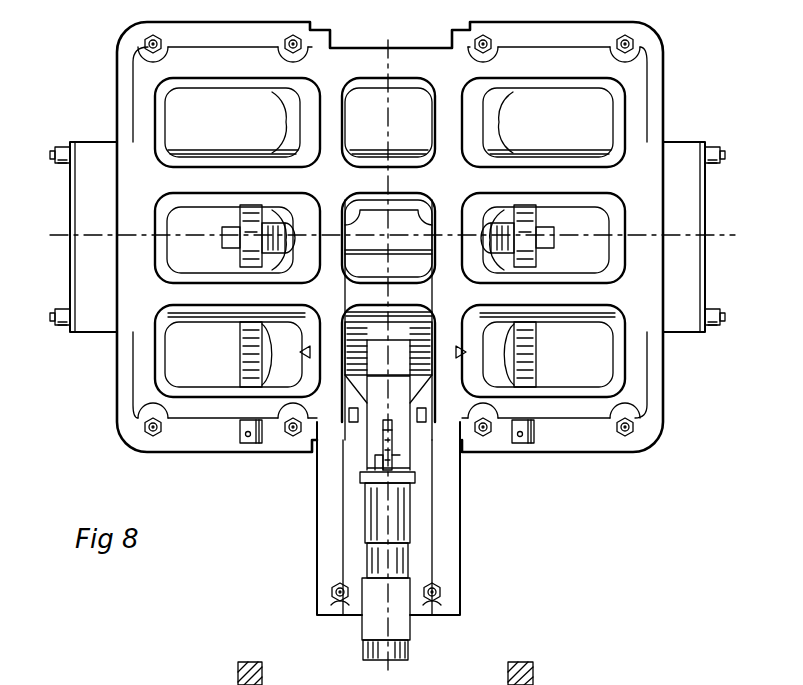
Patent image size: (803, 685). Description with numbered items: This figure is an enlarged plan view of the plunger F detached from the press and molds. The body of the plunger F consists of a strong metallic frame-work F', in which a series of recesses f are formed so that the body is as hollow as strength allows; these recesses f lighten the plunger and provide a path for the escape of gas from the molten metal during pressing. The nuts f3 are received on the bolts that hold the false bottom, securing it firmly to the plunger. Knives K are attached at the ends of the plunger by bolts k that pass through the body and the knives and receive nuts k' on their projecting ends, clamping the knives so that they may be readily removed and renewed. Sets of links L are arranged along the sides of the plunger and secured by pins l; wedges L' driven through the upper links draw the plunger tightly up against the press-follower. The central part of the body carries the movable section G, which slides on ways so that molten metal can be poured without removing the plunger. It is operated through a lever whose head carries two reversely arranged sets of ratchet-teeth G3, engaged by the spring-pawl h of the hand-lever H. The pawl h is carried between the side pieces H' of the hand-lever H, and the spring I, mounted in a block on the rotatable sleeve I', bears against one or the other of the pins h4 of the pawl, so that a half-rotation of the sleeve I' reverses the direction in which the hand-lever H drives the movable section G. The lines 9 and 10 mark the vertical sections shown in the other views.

The plunger F is at (362, 237).
The metallic frame-work F' is at (374, 242).
The recesses f is at (389, 264).
The bolts k is at (391, 240).
The pins l is at (240, 358).
The links L is at (384, 236).
The knives K is at (387, 237).
The nuts k' is at (402, 238).
The section line 9 9 is at (387, 235).
The section line 10 10 is at (387, 355).
The nuts f3 is at (625, 437).
The movable section G is at (388, 511).
The ratchet-teeth G3 is at (382, 340).
The spring-pawl h is at (372, 427).
The pins h4 is at (392, 438).
The spring I is at (428, 498).
The side pieces H' is at (393, 522).
The sleeve I' is at (343, 565).
The hand-lever H is at (386, 619).
The wedge L' is at (385, 673).